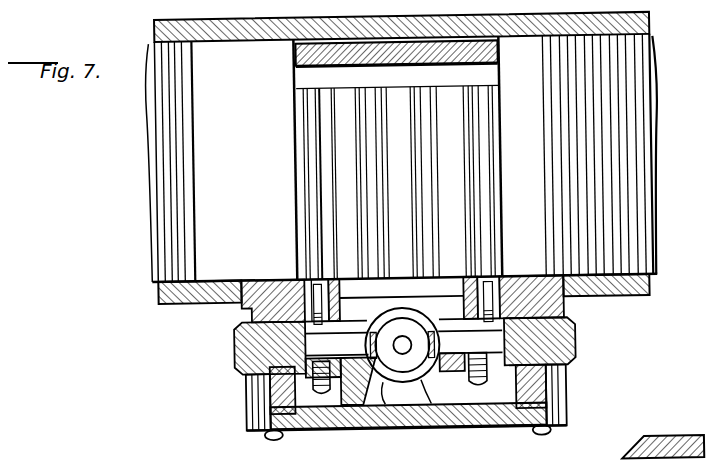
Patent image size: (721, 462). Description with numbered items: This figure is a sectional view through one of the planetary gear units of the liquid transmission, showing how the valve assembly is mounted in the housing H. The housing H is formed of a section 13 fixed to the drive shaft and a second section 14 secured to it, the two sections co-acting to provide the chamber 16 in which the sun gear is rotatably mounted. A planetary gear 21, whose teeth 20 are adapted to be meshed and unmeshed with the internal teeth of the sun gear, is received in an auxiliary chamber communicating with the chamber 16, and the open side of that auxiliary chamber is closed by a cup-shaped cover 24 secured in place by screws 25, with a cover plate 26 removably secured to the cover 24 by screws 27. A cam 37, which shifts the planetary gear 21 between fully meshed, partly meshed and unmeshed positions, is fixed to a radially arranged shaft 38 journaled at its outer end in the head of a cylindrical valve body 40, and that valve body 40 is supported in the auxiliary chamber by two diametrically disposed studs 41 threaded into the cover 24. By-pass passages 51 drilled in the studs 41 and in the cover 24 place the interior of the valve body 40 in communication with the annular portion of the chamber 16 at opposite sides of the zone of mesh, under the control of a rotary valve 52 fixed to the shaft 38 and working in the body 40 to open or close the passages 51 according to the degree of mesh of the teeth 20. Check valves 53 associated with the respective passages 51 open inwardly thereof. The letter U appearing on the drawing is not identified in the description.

The housing section 13 is at (653, 32).
The second housing section 14 is at (157, 293).
The chamber 16 is at (297, 53).
The teeth 20 is at (363, 171).
The planetary gears 21 is at (455, 156).
The cup-shaped cover 24 is at (562, 400).
The screws 25 is at (443, 448).
The cover plate 26 is at (565, 419).
The screws 27 is at (535, 432).
The cam 37 is at (390, 398).
The shaft 38 is at (400, 343).
The cylindrical valve body 40 is at (398, 383).
The studs 41 is at (242, 342).
The by-pass passages 51 is at (322, 289).
The rotary valve 52 is at (433, 388).
The check valves 53 is at (318, 391).
The upper member U is at (659, 132).
The housing H is at (655, 286).